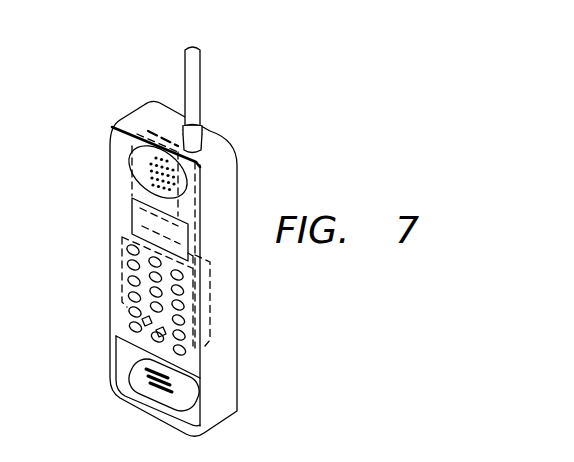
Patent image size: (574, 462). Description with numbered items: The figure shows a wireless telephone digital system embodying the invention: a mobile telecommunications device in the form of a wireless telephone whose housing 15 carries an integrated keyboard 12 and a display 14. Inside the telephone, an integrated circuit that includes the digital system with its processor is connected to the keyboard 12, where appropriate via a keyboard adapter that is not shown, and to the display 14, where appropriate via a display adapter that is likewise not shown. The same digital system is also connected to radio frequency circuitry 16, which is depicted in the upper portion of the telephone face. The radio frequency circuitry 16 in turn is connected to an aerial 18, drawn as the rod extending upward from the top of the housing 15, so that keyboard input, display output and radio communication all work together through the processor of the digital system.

The aerial 18 is at (198, 83).
The radio frequency (RF) circuitry 16 is at (132, 185).
The display 14 is at (131, 212).
The keyboard 12 is at (130, 283).
The housing 15 is at (233, 363).